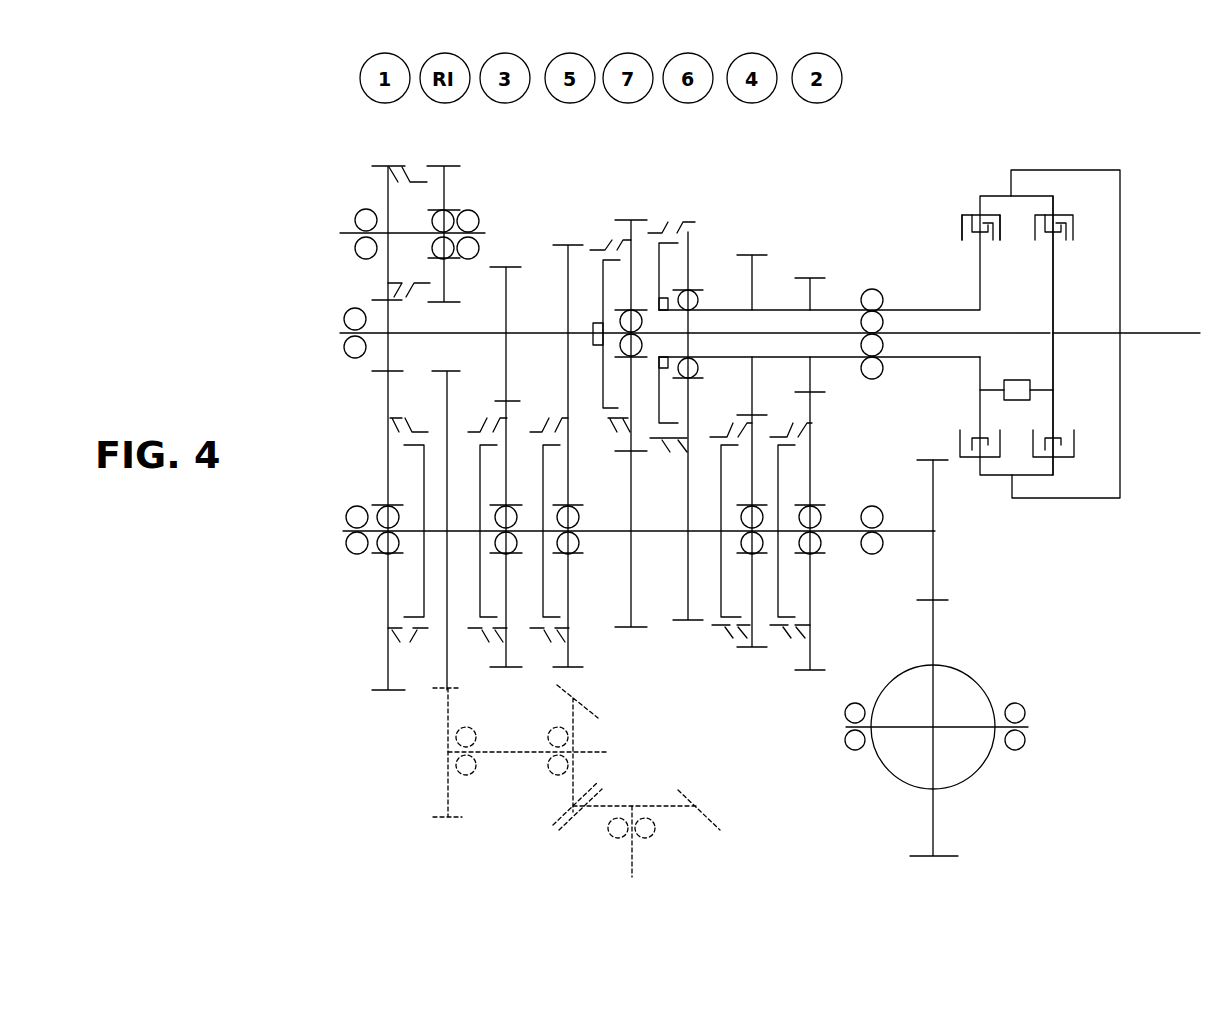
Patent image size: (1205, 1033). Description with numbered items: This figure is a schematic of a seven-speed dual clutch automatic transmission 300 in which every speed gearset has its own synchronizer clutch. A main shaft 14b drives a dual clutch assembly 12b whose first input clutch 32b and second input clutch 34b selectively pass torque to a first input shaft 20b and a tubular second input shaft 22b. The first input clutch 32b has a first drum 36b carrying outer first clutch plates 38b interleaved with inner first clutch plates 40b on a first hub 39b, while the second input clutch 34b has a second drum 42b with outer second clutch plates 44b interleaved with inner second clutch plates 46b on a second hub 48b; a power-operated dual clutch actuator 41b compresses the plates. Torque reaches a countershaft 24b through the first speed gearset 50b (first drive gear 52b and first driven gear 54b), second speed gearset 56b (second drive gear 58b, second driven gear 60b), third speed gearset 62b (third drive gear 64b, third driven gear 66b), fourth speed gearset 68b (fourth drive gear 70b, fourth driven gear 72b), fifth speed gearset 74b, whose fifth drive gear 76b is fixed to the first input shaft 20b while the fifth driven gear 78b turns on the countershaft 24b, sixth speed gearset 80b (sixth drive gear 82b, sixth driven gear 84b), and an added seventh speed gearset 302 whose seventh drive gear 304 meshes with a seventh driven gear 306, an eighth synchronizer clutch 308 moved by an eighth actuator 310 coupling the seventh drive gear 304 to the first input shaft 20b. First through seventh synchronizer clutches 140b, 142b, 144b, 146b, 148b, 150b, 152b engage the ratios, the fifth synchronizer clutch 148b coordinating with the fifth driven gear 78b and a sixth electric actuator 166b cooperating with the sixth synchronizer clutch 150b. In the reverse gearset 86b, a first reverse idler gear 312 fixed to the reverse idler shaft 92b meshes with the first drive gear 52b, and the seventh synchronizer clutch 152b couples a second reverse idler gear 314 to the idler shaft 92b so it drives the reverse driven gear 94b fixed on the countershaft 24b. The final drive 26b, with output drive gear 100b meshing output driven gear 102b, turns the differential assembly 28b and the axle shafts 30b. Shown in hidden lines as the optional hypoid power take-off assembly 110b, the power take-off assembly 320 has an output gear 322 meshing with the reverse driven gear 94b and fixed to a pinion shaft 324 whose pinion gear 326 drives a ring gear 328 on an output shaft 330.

The seven-speed automatic transmission 300 is at (237, 140).
The dual clutch assembly 12b is at (1062, 160).
The main shaft 14b is at (1175, 333).
The first input shaft 20b is at (1047, 333).
The second input shaft 22b is at (955, 298).
The countershaft 24b is at (925, 658).
The final drive 26b is at (963, 572).
The differential assembly 28b is at (977, 785).
The axle shafts 30b is at (945, 727).
The first input clutch 32b is at (1088, 221).
The second input clutch 34b is at (951, 205).
The first drum 36b is at (1066, 212).
The outer first clutch plates 38b is at (1075, 228).
The first hub 39b is at (1055, 303).
The inner first clutch plates 40b is at (1046, 230).
The dual clutch actuator 41b is at (1020, 360).
The second drum 42b is at (963, 214).
The outer second clutch plates 44b is at (961, 224).
The inner second clutch plates 46b is at (991, 235).
The second hub 48b is at (980, 250).
The first speed gearset 50b is at (372, 152).
The first drive gear 52b is at (385, 364).
The first driven gear 54b is at (388, 401).
The second speed gearset 56b is at (814, 250).
The second drive gear 58b is at (810, 291).
The second driven gear 60b is at (812, 405).
The third speed gearset 62b is at (503, 258).
The third drive gear 64b is at (505, 288).
The third driven gear 66b is at (506, 408).
The fourth speed gearset 68b is at (761, 226).
The fourth drive gear 70b is at (752, 291).
The fourth driven gear 72b is at (737, 418).
The fifth speed gearset 74b is at (569, 238).
The fifth drive gear 76b is at (568, 262).
The fifth driven gear 78b is at (597, 583).
The sixth speed gearset 80b is at (701, 210).
The sixth drive gear 82b is at (688, 257).
The sixth driven gear 84b is at (688, 512).
The reverse gearset 86b is at (450, 160).
The reverse idler shaft 92b is at (345, 235).
The reverse driven gear 94b is at (447, 403).
The output drive gear 100b is at (933, 480).
The output driven gear 102b is at (935, 625).
The hypoid power take-off assembly 110b is at (365, 730).
The first synchronizer clutch 140b is at (418, 642).
The second synchronizer clutch 142b is at (783, 640).
The third synchronizer clutch 144b is at (478, 642).
The fourth synchronizer clutch 146b is at (723, 640).
The fifth synchronizer clutch 148b is at (540, 642).
The sixth synchronizer clutch 150b is at (655, 228).
The seventh synchronizer clutch 152b is at (408, 310).
The sixth electric actuator 166b is at (668, 362).
The seventh speed gearset 302 is at (633, 210).
The seventh drive gear 304 is at (633, 293).
The seventh driven gear 306 is at (657, 513).
The eighth synchronizer clutch 308 is at (603, 427).
The eighth actuator 310 is at (603, 318).
The first reverse idler gear 312 is at (388, 195).
The second reverse idler gear 314 is at (447, 178).
The power take-off assembly 320 is at (648, 717).
The output gear 322 is at (448, 800).
The pinion shaft 324 is at (502, 760).
The pinion gear 326 is at (575, 733).
The ring gear 328 is at (727, 790).
The output shaft 330 is at (632, 858).